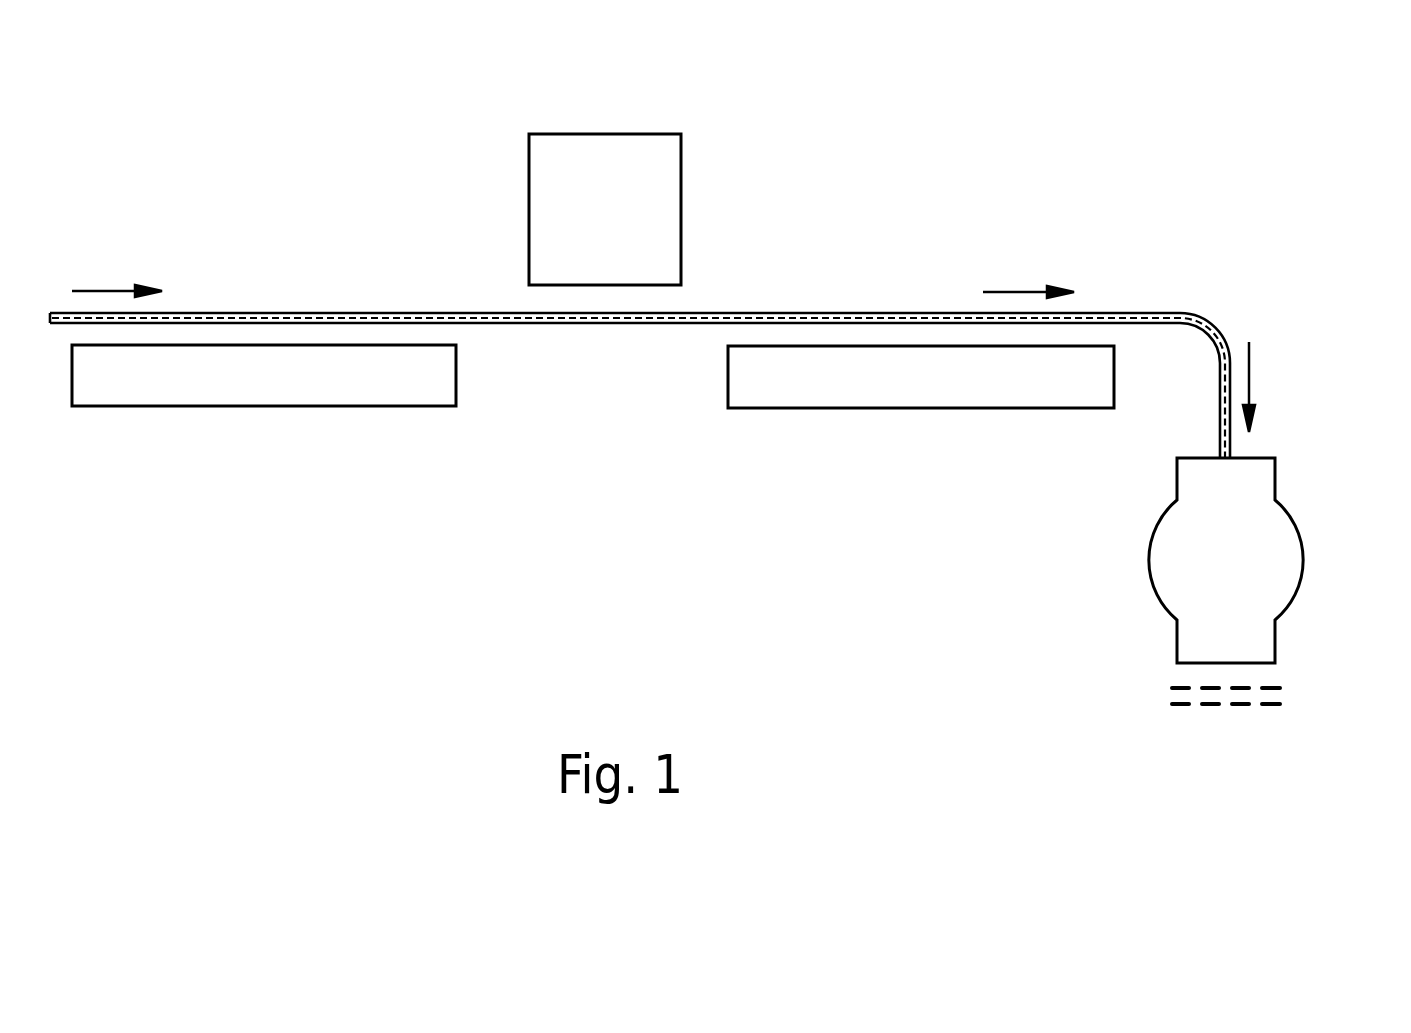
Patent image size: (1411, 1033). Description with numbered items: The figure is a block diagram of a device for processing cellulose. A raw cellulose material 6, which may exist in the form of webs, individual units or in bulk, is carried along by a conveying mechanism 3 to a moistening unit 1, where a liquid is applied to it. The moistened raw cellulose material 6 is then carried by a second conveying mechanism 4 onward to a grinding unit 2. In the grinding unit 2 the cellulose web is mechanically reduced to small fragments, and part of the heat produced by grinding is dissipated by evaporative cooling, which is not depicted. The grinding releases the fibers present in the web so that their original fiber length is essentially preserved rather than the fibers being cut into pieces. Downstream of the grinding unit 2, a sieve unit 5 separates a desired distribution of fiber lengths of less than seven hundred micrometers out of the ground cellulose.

The moistening unit 1 is at (603, 163).
The grinding unit 2 is at (1297, 523).
The conveying mechanism 3 is at (278, 382).
The second conveying mechanism 4 is at (920, 384).
The sieve unit 5 is at (1282, 690).
The raw cellulose material 6 is at (285, 313).